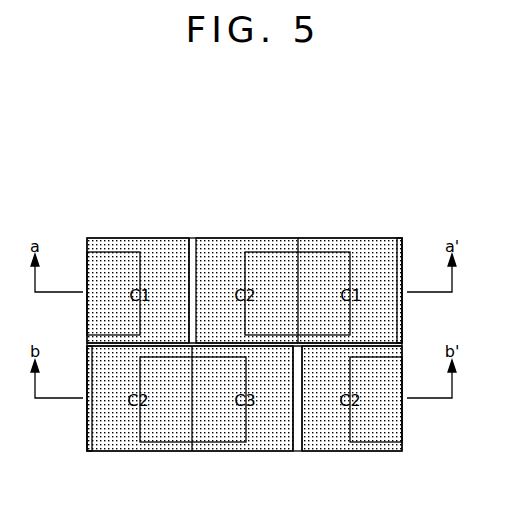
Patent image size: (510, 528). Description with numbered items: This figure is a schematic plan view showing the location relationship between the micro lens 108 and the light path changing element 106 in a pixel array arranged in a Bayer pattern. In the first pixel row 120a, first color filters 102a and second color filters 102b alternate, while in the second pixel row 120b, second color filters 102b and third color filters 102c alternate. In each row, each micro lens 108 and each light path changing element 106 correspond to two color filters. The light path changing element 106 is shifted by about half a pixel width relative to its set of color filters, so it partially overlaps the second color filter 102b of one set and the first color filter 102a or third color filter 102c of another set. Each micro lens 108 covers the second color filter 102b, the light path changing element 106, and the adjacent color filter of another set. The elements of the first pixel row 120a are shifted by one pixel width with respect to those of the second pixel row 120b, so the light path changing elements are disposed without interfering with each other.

The first color filter 102a is at (138, 238).
The second color filter 102b is at (218, 238).
The third color filter 102c is at (273, 451).
The light path changing element 106 is at (329, 252).
The micro lens 108 is at (400, 234).
The first pixel row 120a is at (404, 250).
The second pixel row 120b is at (404, 431).